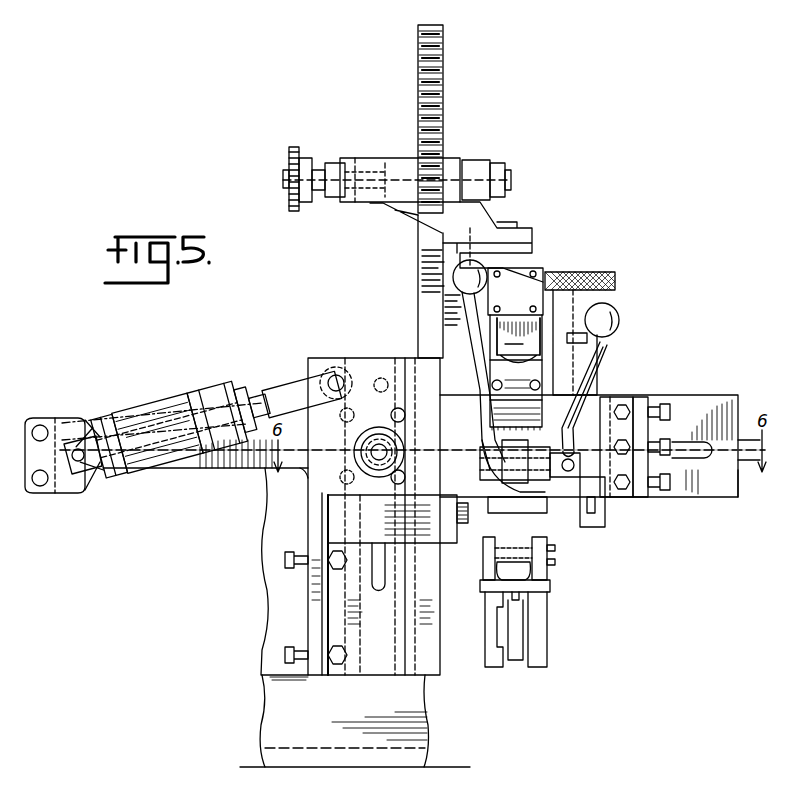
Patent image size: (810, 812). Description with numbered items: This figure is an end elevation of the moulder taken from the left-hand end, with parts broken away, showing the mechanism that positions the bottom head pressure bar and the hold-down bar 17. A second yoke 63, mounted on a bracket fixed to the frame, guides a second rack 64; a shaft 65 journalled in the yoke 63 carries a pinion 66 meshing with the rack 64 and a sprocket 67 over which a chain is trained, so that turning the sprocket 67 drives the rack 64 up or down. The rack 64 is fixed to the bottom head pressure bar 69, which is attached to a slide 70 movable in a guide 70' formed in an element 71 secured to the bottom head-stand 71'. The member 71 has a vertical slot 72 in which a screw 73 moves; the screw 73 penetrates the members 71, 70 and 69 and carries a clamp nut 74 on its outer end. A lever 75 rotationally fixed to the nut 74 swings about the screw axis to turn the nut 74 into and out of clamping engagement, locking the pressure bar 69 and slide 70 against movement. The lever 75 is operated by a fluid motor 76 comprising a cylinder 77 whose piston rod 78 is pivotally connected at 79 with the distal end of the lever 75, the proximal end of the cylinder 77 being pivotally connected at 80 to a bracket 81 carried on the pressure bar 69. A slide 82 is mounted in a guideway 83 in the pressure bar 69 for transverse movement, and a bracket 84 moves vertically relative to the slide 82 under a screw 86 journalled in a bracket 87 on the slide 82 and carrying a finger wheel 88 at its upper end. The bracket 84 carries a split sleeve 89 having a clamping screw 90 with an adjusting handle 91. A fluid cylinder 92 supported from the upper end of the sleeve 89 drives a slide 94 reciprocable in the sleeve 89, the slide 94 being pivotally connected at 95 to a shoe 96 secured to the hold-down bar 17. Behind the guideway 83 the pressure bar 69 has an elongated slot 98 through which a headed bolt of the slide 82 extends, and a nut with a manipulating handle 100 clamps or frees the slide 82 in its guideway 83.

The hold-down bar 17 is at (548, 632).
The second yoke 63 is at (488, 160).
The second rack 64 is at (446, 90).
The shaft 65 is at (318, 165).
The pinion 66 is at (446, 170).
The sprocket 67 is at (297, 148).
The bottom head pressure bar 69 is at (700, 396).
The slide 70 is at (346, 574).
The guide 70' is at (355, 721).
The element 71 is at (390, 516).
The bottom head-stand 71' is at (368, 721).
The vertical slot 72 is at (382, 580).
The screw 73 is at (376, 456).
The clamp nut 74 is at (374, 452).
The lever 75 is at (375, 372).
The fluid motor 76 is at (236, 370).
The cylinder 77 is at (182, 398).
The piston rod 78 is at (291, 382).
The pivotal connection 79 is at (341, 376).
The pivotal connection 80 is at (78, 462).
The bracket 81 is at (48, 420).
The slide 82 is at (642, 398).
The guideway 83 is at (738, 472).
The bracket 84 is at (578, 528).
The screw 86 is at (604, 351).
The bracket 87 is at (598, 374).
The finger wheel 88 is at (617, 280).
The split sleeve 89 is at (538, 482).
The clamping screw 90 is at (470, 497).
The adjusting handle 91 is at (619, 316).
The fluid cylinder 92 is at (515, 349).
The slide 94 is at (500, 550).
The pivotal connection 95 is at (556, 563).
The shoe 96 is at (550, 578).
The elongated slot 98 is at (700, 460).
The manipulating handle 100 is at (455, 278).